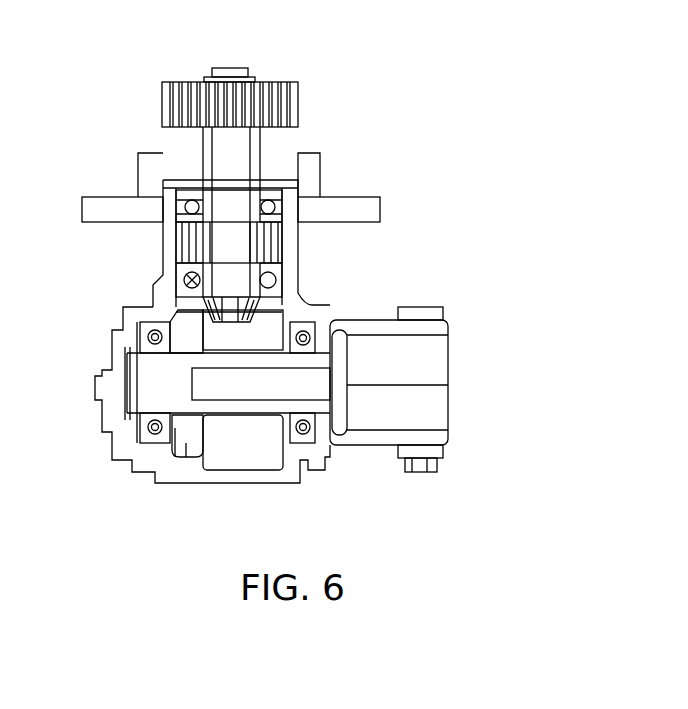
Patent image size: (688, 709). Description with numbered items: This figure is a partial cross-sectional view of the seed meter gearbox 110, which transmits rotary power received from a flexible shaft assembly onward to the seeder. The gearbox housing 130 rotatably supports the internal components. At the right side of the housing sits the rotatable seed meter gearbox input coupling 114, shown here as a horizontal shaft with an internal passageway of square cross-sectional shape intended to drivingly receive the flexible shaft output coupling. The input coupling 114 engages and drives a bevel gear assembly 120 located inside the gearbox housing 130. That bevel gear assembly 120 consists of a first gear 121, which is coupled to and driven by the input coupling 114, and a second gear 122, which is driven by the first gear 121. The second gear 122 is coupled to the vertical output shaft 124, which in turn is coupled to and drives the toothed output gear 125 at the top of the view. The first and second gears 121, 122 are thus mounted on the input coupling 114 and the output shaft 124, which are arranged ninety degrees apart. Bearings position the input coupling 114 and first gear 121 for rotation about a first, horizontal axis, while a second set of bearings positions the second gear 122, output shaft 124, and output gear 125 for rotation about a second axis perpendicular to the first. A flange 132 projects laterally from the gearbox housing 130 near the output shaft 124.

The seed meter gearbox 110 is at (445, 152).
The seed meter gearbox input coupling 114 is at (338, 375).
The bevel gear assembly 120 is at (192, 308).
The first gear 121 is at (188, 452).
The second gear 122 is at (208, 312).
The output shaft 124 is at (242, 157).
The output gear 125 is at (288, 93).
The gearbox housing 130 is at (303, 290).
The flange 132 is at (363, 196).